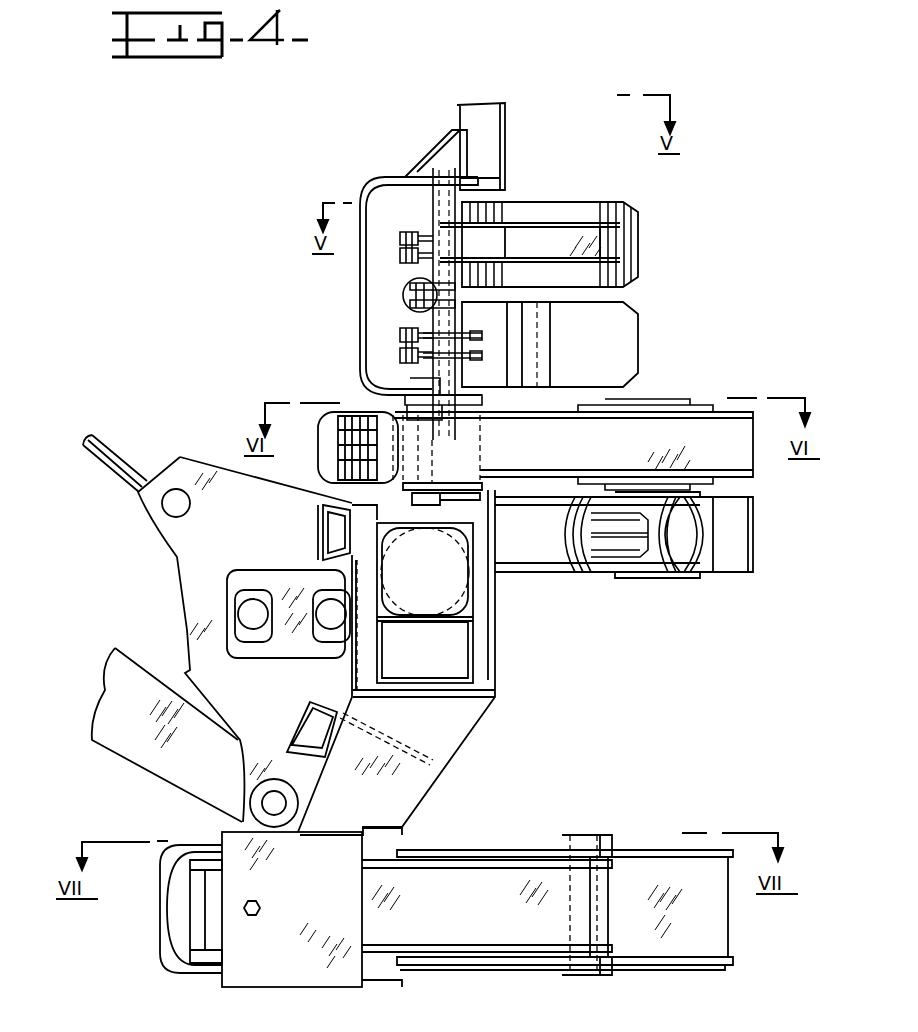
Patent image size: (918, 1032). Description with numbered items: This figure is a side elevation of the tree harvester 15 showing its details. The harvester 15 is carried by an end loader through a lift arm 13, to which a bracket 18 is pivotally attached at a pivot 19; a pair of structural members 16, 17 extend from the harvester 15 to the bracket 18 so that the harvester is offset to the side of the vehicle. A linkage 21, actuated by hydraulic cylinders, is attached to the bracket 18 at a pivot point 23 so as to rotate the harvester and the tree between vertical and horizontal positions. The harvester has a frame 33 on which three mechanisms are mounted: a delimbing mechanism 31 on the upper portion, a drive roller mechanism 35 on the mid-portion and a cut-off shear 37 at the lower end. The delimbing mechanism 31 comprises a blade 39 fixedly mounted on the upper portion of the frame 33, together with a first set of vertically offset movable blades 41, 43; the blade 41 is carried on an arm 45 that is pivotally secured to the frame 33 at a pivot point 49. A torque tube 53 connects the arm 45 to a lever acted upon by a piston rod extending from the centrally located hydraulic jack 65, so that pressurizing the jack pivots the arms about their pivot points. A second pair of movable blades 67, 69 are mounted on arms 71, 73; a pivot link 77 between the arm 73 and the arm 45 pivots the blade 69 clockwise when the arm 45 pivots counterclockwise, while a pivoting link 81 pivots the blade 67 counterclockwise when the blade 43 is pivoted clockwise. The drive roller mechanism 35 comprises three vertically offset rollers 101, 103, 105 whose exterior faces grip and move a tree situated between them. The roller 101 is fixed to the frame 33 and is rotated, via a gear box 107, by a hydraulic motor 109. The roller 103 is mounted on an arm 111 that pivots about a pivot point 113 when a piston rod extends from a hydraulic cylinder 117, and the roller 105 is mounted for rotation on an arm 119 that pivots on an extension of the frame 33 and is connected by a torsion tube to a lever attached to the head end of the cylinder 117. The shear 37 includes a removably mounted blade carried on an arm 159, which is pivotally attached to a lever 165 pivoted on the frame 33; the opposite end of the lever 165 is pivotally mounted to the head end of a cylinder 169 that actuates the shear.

The lift arm 13 is at (106, 678).
The tree harvester 15 is at (216, 260).
The structural member 16 is at (327, 522).
The structural member 17 is at (313, 720).
The bracket 18 is at (178, 562).
The pivot 19 is at (282, 802).
The linkage 21 is at (100, 408).
The pivot point 23 is at (162, 505).
The delimbing mechanism 31 is at (652, 286).
The frame 33 is at (452, 142).
The drive roller mechanism 35 is at (596, 614).
The cut-off shear 37 is at (632, 808).
The blade 39 is at (493, 143).
The movable blade 41 is at (633, 228).
The movable blade 43 is at (632, 342).
The arm 45 is at (598, 228).
The pivot point 49 is at (431, 207).
The torque tube 53 is at (423, 322).
The hydraulic jack 65 is at (405, 294).
The movable blade 67 is at (497, 362).
The movable blade 69 is at (500, 210).
The arm 71 is at (473, 337).
The arm 73 is at (438, 237).
The pivot link 77 is at (403, 252).
The pivoting link 81 is at (403, 347).
The roller 101 is at (437, 618).
The roller 103 is at (672, 405).
The roller 105 is at (645, 565).
The gear box 107 is at (465, 606).
The hydraulic motor 109 is at (270, 572).
The arm 111 is at (575, 457).
The pivot point 113 is at (430, 447).
The hydraulic cylinder 117 is at (327, 460).
The arm 119 is at (542, 548).
The arm 159 is at (718, 933).
The lever 165 is at (480, 917).
The cylinder 169 is at (175, 960).